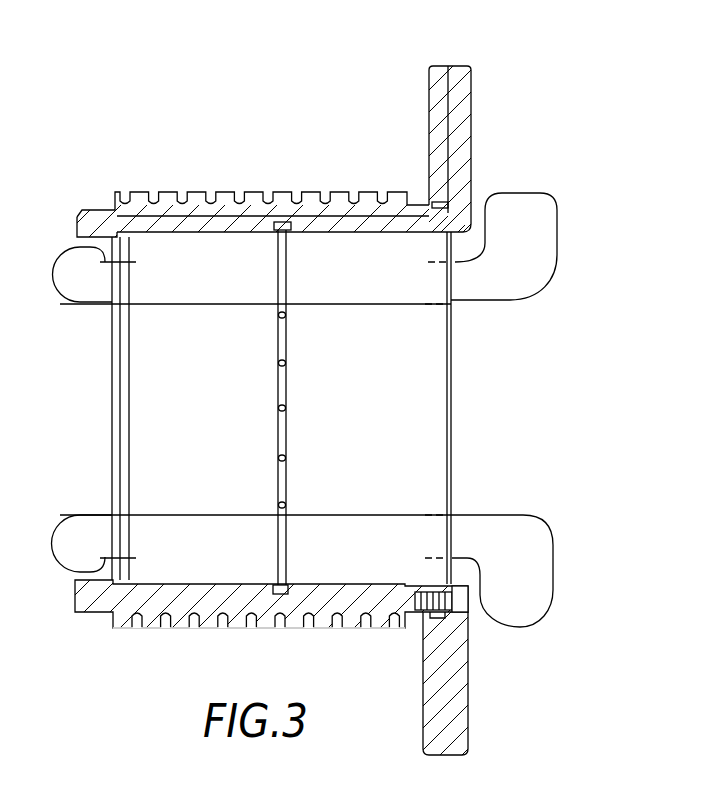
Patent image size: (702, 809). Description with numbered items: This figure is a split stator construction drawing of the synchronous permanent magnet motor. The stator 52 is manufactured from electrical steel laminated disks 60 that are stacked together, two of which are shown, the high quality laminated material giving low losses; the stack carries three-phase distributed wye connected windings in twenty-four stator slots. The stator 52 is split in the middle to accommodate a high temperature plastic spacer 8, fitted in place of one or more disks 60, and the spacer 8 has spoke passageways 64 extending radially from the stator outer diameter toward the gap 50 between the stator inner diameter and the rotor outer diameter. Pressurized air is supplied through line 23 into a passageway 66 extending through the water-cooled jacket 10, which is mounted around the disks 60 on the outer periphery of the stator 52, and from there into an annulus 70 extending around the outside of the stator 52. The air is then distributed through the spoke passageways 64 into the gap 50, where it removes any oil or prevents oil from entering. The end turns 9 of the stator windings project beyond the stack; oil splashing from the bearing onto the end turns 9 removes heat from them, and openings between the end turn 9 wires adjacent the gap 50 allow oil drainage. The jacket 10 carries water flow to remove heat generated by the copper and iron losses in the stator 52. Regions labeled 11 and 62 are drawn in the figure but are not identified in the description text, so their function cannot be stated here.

The high temperature plastic spacer 8 is at (287, 470).
The end turns 9 is at (552, 273).
The water-cooled jacket 10 is at (76, 225).
The chamber 11 is at (187, 292).
The line 23 is at (463, 42).
The gap 50 is at (412, 305).
The stator 52 is at (433, 243).
The laminated disks 60 is at (133, 240).
The outer wall 62 is at (152, 389).
The spoke passageways 64 is at (294, 292).
The passageway 66 is at (312, 220).
The annulus 70 is at (270, 233).